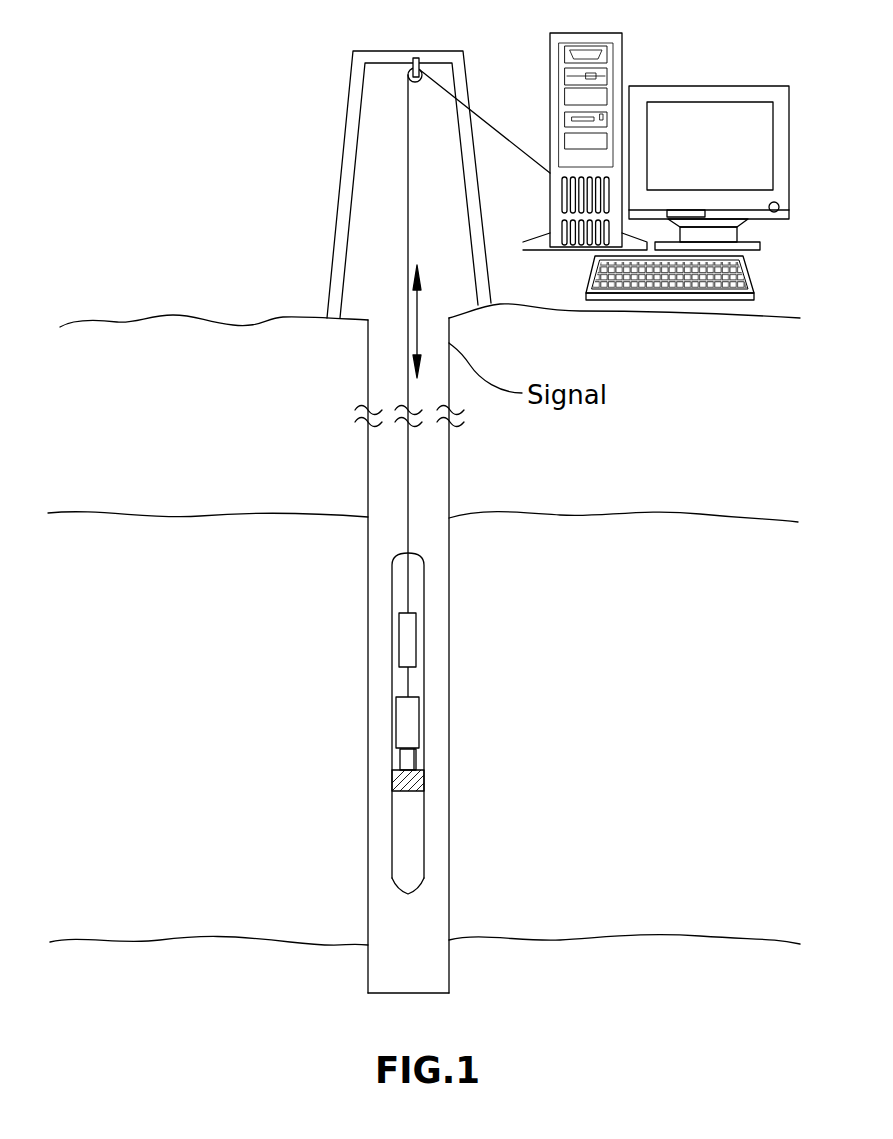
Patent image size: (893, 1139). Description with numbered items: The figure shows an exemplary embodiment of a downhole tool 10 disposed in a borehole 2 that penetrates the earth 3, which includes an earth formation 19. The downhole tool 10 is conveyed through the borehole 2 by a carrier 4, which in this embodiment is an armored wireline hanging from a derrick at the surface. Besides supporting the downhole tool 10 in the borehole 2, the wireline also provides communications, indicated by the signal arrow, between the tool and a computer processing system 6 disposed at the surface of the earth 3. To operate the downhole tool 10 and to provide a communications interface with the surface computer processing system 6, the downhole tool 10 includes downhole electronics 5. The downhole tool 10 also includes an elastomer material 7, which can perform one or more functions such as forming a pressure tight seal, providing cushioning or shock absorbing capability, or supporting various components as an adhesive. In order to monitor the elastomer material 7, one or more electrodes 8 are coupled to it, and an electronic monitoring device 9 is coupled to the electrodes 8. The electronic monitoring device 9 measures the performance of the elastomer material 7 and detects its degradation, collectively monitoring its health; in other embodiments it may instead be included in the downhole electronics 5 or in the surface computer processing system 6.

The borehole 2 is at (368, 350).
The earth 3 is at (150, 422).
The carrier 4 is at (408, 456).
The downhole electronics 5 is at (399, 632).
The computer processing system 6 is at (550, 82).
The elastomer material 7 is at (392, 780).
The electrodes 8 is at (417, 760).
The electronic monitoring device 9 is at (396, 712).
The downhole tool 10 is at (392, 580).
The earth formation 19 is at (183, 708).